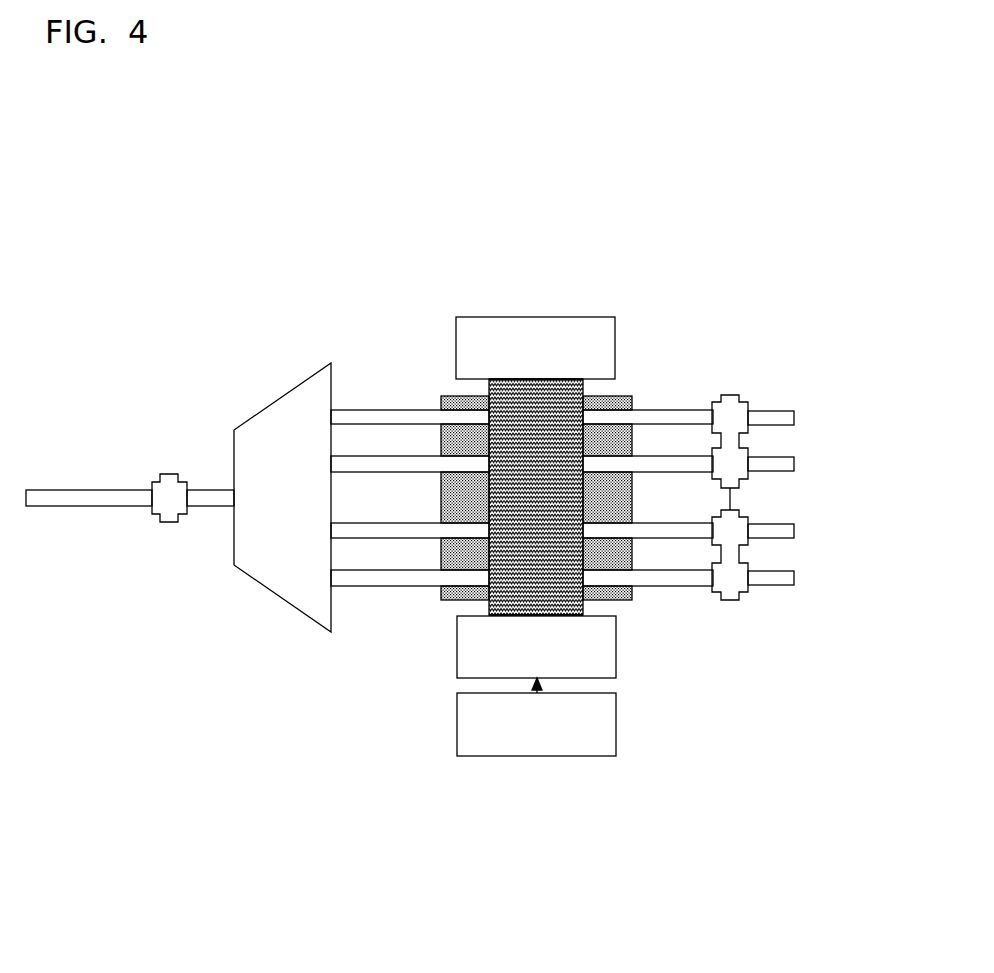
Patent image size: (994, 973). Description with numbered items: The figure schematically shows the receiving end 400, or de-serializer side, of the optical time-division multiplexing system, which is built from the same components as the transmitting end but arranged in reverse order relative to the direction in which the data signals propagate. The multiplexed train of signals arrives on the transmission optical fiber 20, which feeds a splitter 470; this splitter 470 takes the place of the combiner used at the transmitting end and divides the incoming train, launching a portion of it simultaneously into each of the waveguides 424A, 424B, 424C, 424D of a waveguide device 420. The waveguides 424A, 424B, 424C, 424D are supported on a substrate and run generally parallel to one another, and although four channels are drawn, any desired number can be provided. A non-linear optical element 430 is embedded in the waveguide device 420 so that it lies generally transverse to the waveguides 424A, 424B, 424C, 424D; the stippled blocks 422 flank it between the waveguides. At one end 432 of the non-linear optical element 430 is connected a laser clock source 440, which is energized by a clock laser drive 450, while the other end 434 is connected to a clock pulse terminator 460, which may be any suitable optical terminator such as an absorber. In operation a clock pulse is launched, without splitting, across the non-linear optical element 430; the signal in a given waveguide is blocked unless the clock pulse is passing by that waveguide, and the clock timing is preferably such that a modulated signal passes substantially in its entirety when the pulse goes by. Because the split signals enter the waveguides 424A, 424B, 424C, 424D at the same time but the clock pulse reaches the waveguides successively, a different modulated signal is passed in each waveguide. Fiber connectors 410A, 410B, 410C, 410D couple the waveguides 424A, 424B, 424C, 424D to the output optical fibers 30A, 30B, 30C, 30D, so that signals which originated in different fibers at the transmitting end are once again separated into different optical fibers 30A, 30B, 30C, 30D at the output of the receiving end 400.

The transmission optical fiber 20 is at (124, 521).
The output optical fiber 30A is at (795, 418).
The output optical fiber 30B is at (795, 464).
The output optical fiber 30C is at (795, 531).
The output optical fiber 30D is at (795, 578).
The receiving end 400 is at (225, 770).
The fiber connector 410A is at (710, 430).
The fiber connector 410B is at (721, 483).
The fiber connector 410C is at (715, 543).
The fiber connector 410D is at (733, 600).
The waveguide device 420 is at (424, 623).
The cladding blocks 422 is at (628, 588).
The waveguide 424A is at (427, 428).
The waveguide 424B is at (425, 475).
The waveguide 424C is at (425, 540).
The waveguide 424D is at (425, 586).
The non-linear optical element 430 is at (584, 500).
The end of the non-linear optical element 432 is at (585, 607).
The other end of the non-linear optical element 434 is at (585, 389).
The laser clock source 440 is at (455, 631).
The clock laser drive 450 is at (457, 707).
The clock pulse terminator 460 is at (616, 338).
The splitter 470 is at (280, 596).